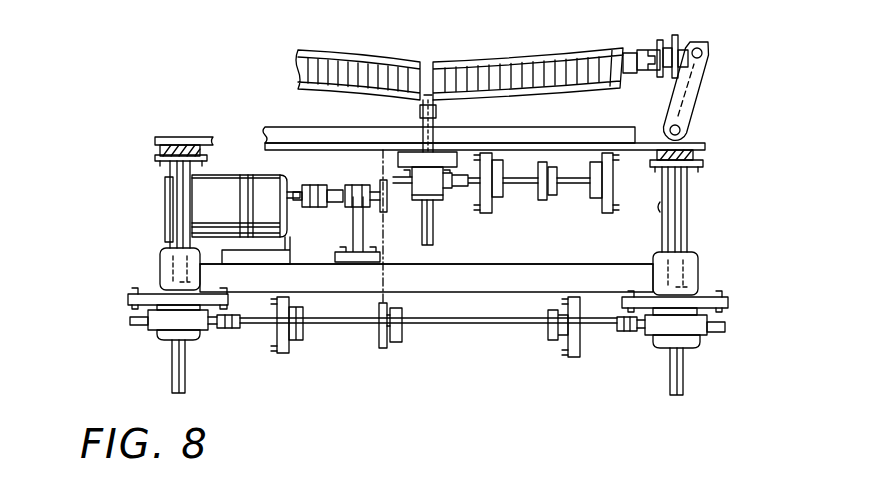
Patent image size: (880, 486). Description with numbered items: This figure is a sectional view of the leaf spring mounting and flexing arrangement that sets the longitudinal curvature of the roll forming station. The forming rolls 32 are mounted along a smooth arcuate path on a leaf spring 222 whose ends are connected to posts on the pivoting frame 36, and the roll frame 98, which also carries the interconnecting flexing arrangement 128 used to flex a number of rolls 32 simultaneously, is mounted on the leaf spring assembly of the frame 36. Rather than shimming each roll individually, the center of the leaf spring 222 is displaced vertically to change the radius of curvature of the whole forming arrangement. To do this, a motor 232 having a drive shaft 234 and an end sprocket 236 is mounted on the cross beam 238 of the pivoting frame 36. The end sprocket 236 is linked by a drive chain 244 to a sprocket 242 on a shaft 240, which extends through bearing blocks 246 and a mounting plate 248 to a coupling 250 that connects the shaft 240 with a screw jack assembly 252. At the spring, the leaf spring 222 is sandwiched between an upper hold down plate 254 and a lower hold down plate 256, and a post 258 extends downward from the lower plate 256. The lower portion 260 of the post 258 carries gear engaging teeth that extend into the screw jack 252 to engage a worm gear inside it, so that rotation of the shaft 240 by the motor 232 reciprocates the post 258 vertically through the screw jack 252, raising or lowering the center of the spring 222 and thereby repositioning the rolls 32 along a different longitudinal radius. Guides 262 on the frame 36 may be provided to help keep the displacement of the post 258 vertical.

The forming roll 32 is at (343, 55).
The roll frame 98 is at (642, 133).
The leaf spring 222 is at (182, 148).
The motor 232 is at (257, 175).
The drive shaft 234 is at (295, 185).
The end sprocket 236 is at (383, 177).
The cross beam 238 is at (535, 264).
The interconnecting flexing arrangement 128 is at (557, 219).
The drive chain 244 is at (387, 250).
The hold down plate 254 is at (167, 137).
The hold down plate 256 is at (157, 154).
The post 258 is at (173, 167).
The guide 262 is at (197, 192).
The lower portion of post 260 is at (170, 272).
The pivoting frame 36 is at (698, 268).
The shaft 240 is at (450, 326).
The sprocket 242 is at (390, 348).
The bearing block 246 is at (302, 340).
The mounting plate 248 is at (285, 353).
The coupling 250 is at (227, 330).
The screw jack assembly 252 is at (158, 337).